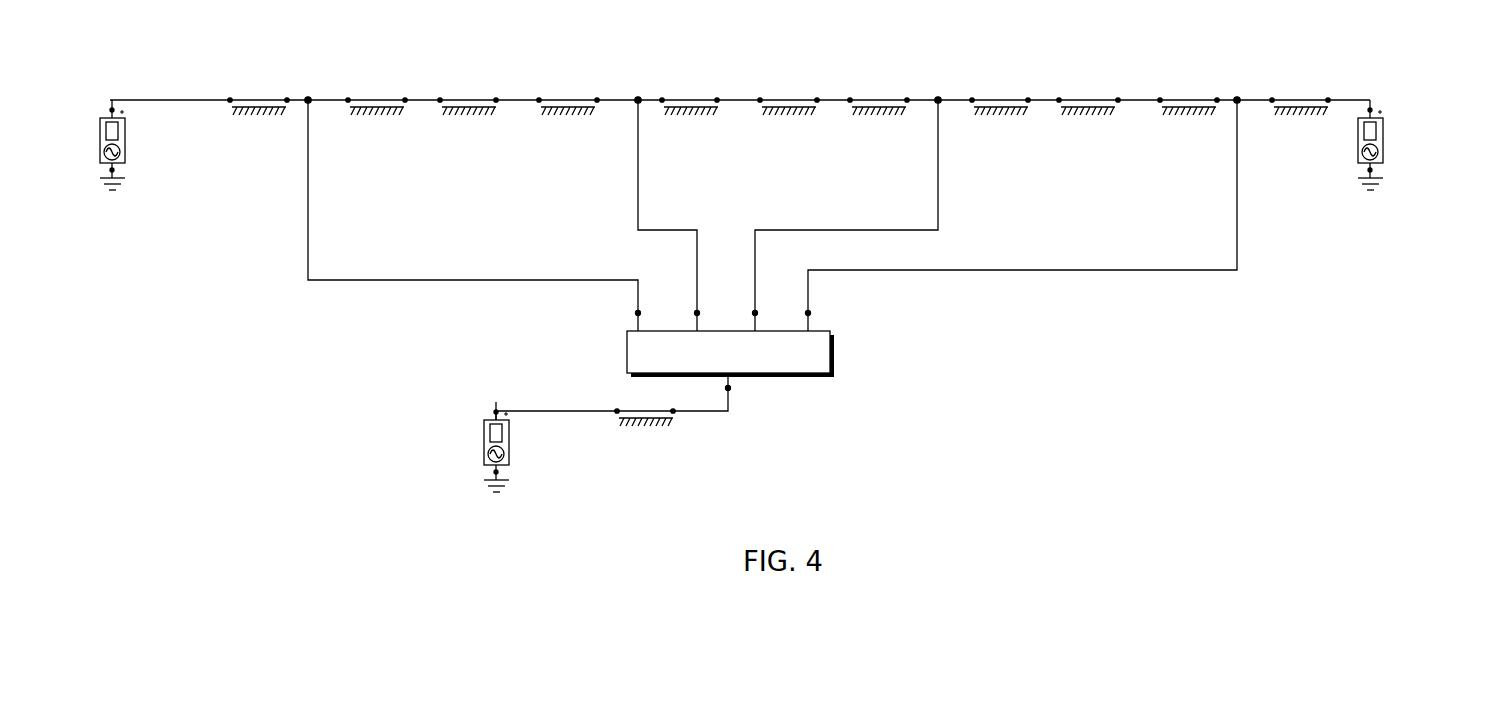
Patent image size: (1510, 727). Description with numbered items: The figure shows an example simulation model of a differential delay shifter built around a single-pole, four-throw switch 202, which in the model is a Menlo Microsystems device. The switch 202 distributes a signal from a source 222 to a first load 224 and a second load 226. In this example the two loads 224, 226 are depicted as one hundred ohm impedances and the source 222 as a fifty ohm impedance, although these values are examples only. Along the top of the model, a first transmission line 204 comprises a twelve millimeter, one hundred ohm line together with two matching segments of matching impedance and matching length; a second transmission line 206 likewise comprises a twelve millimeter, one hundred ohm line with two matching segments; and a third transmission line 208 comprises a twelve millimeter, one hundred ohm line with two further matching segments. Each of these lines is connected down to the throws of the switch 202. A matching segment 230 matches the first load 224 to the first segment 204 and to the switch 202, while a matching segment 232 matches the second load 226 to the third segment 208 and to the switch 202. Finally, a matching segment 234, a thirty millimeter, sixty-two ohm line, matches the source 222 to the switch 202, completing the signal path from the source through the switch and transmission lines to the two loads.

The switch 202 is at (627, 352).
The first transmission line 204 is at (600, 88).
The second transmission line 206 is at (912, 88).
The third transmission line 208 is at (1225, 88).
The source P3 222 is at (484, 440).
The first load P1 224 is at (110, 96).
The second load P2 226 is at (1358, 160).
The matching segment 230 is at (246, 100).
The matching segment 232 is at (1292, 100).
The matching segment 234 is at (634, 411).